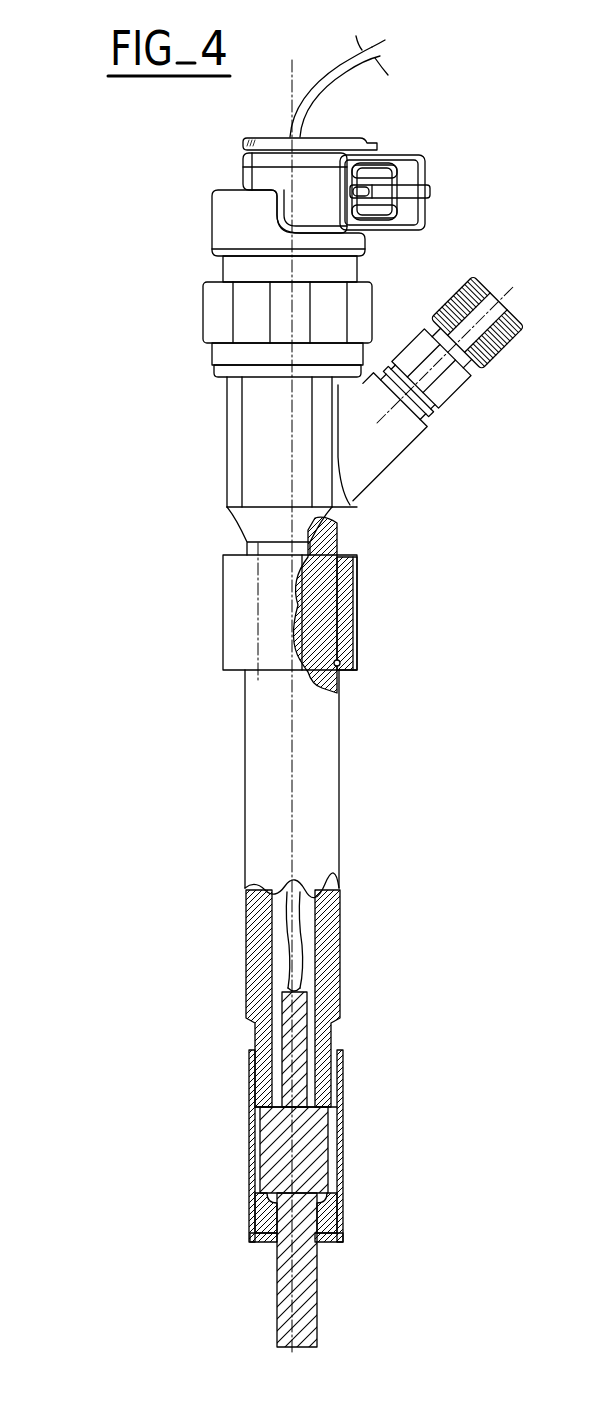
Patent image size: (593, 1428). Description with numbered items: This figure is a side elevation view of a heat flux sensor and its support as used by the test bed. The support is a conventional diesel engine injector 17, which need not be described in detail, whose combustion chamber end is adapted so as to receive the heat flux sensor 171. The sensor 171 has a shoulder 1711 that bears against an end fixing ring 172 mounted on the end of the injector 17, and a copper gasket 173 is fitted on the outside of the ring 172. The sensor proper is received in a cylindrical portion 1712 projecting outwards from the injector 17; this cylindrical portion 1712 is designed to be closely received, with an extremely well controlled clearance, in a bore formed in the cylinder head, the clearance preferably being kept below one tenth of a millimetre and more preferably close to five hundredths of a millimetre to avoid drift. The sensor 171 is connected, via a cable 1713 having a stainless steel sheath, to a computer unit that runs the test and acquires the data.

The diesel engine injector 17 is at (228, 755).
The heat flux sensor 171 is at (292, 1140).
The shoulder 1711 is at (260, 1205).
The cylindrical portion 1712 is at (302, 1320).
The cable 1713 is at (327, 82).
The end fixing ring 172 is at (333, 1212).
The copper gasket 173 is at (332, 1247).